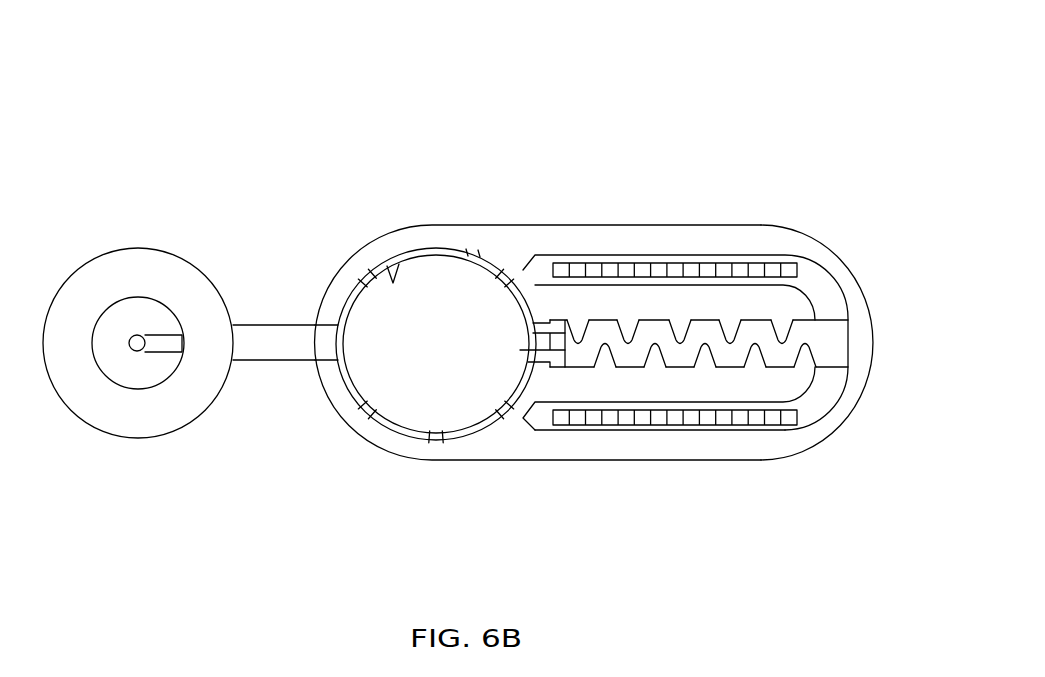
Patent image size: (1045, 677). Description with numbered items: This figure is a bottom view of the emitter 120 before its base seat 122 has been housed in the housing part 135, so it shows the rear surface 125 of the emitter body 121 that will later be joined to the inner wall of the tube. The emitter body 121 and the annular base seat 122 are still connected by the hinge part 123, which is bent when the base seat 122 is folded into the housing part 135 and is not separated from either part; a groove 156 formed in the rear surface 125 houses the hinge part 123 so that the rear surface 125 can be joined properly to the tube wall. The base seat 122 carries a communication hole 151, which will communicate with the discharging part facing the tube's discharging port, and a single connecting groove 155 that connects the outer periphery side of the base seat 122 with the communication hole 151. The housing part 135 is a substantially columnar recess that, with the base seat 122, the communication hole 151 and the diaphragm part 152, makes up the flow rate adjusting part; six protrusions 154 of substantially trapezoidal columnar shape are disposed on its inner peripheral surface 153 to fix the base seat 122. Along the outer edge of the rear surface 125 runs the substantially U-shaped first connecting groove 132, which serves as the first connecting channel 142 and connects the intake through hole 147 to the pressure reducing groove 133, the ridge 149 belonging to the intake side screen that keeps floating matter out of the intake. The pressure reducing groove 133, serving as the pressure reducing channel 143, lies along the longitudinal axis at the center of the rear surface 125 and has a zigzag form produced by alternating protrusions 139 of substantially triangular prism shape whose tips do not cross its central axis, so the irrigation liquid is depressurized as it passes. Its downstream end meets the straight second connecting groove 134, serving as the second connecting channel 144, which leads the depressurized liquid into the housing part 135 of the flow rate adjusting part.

The emitter 120 is at (871, 97).
The emitter body 121 is at (876, 318).
The base seat 122 is at (255, 202).
The hinge part 123 is at (302, 333).
The rear surface 125 is at (386, 437).
The first connecting groove 132 is at (815, 282).
The pressure reducing groove 133 is at (696, 337).
The second connecting groove 134 is at (537, 322).
The housing part 135 is at (473, 253).
The protrusion 139 is at (653, 358).
The first connecting channel 142 is at (685, 342).
The pressure reducing channel 143 is at (699, 343).
The second connecting channel 144 is at (542, 343).
The intake through hole 147 is at (638, 262).
The ridge 149 is at (762, 418).
The communication hole 151 is at (141, 337).
The diaphragm part 152 is at (432, 342).
The inner peripheral surface 153 is at (382, 265).
The protrusion 154 is at (370, 402).
The connecting groove 155 is at (168, 343).
The groove 156 is at (331, 347).